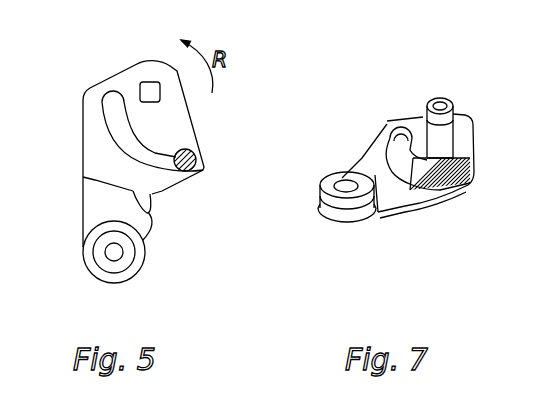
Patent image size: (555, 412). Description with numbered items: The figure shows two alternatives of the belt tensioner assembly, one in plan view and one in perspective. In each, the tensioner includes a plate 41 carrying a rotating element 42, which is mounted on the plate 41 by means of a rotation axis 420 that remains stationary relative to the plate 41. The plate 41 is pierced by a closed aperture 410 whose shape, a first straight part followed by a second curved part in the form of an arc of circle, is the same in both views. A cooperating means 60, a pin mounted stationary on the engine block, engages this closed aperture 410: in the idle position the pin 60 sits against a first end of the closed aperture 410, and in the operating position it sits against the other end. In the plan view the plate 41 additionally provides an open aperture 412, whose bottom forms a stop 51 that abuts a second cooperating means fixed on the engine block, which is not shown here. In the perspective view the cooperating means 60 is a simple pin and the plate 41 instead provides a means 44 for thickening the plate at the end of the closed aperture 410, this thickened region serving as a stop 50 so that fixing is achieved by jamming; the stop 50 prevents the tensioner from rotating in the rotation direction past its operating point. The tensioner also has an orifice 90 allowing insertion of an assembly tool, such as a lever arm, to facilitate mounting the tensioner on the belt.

In FIG. 5, the plate 41 is at (105, 156).
In FIG. 7, the plate 41 is at (374, 143).
In FIG. 5, the closed aperture 410 is at (116, 124).
In FIG. 7, the closed aperture 410 is at (386, 117).
In FIG. 5, the open aperture 412 is at (150, 200).
In FIG. 5, the rotating element 42 is at (127, 282).
In FIG. 7, the rotating element 42 is at (328, 218).
In FIG. 5, the rotation axis 420 is at (108, 256).
In FIG. 7, the rotation axis 420 is at (338, 178).
In FIG. 7, the means for thickening the plate 44 is at (438, 175).
In FIG. 7, the stop 50 is at (362, 142).
In FIG. 5, the stop 51 is at (128, 190).
In FIG. 5, the cooperating means 60 is at (203, 171).
In FIG. 7, the cooperating means 60 is at (450, 92).
In FIG. 5, the orifice 90 is at (147, 82).